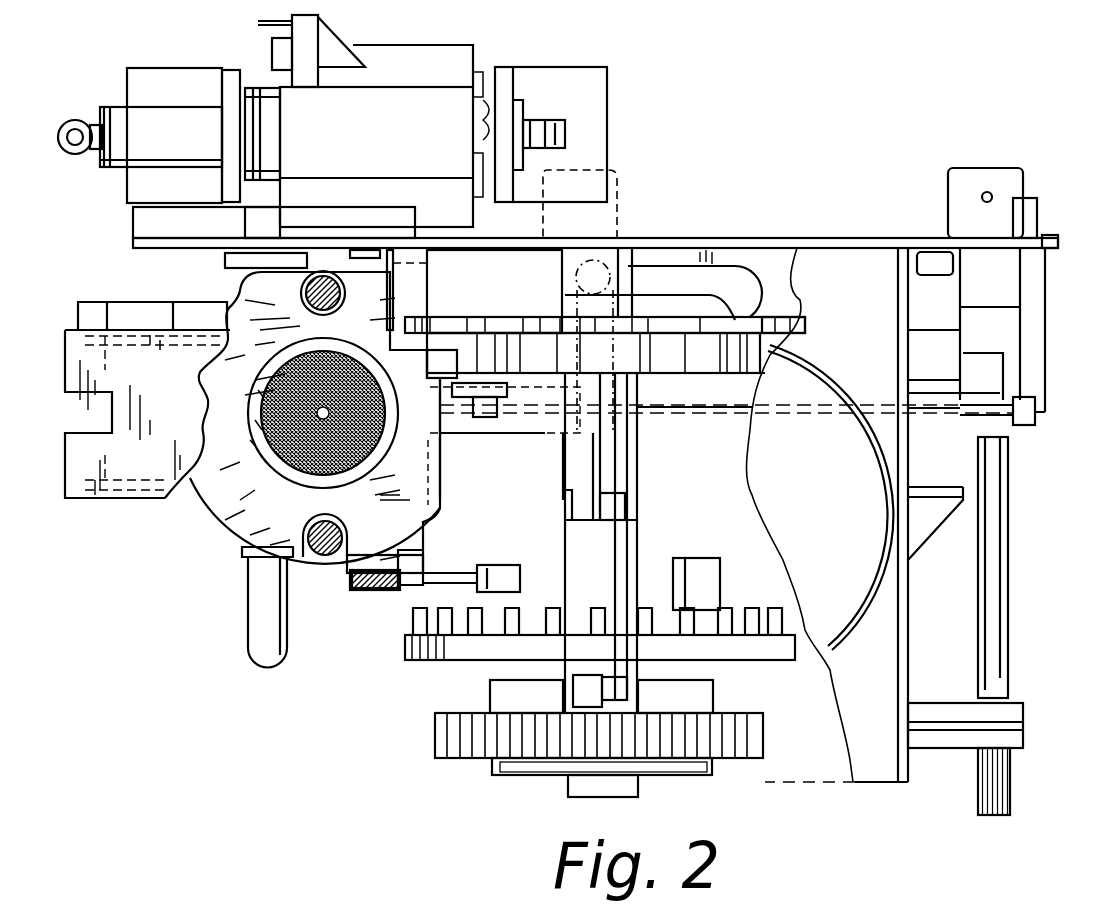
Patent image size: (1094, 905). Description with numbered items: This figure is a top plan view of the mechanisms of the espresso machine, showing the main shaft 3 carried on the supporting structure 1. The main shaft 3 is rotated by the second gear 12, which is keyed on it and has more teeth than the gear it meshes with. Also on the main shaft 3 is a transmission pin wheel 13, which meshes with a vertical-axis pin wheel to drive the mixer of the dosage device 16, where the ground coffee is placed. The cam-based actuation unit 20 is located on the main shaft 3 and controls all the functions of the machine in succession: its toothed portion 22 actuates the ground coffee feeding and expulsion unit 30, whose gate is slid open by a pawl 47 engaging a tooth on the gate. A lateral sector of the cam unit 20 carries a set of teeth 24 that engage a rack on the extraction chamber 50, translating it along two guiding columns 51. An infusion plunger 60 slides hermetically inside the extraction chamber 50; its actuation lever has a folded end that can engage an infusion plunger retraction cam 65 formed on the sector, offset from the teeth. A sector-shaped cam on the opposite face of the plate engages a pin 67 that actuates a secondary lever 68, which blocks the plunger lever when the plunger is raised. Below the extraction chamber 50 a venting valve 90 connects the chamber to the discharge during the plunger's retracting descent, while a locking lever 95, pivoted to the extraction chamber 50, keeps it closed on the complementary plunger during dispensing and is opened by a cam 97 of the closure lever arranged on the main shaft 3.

The supporting structure 1 is at (718, 200).
The main shaft 3 is at (580, 547).
The second gear 12 is at (462, 730).
The transmission pin wheel 13 is at (473, 620).
The dosage device 16 is at (873, 597).
The cam-based actuation unit 20 is at (778, 310).
The toothed portion 22 is at (527, 322).
The set of teeth for the translatory motion of the extraction chamber 24 is at (713, 373).
The ground coffee feeding and expulsion unit 30 is at (110, 500).
The pawl 47 is at (938, 388).
The extraction chamber 50 is at (215, 522).
The guiding columns 51 is at (233, 290).
The infusion plunger 60 is at (290, 470).
The infusion plunger retraction cam 65 is at (470, 400).
The pin 67 is at (607, 262).
The secondary lever 68 is at (690, 283).
The venting valve 90 is at (247, 418).
The locking lever 95 is at (365, 252).
The cam of the closure lever 97 is at (693, 572).